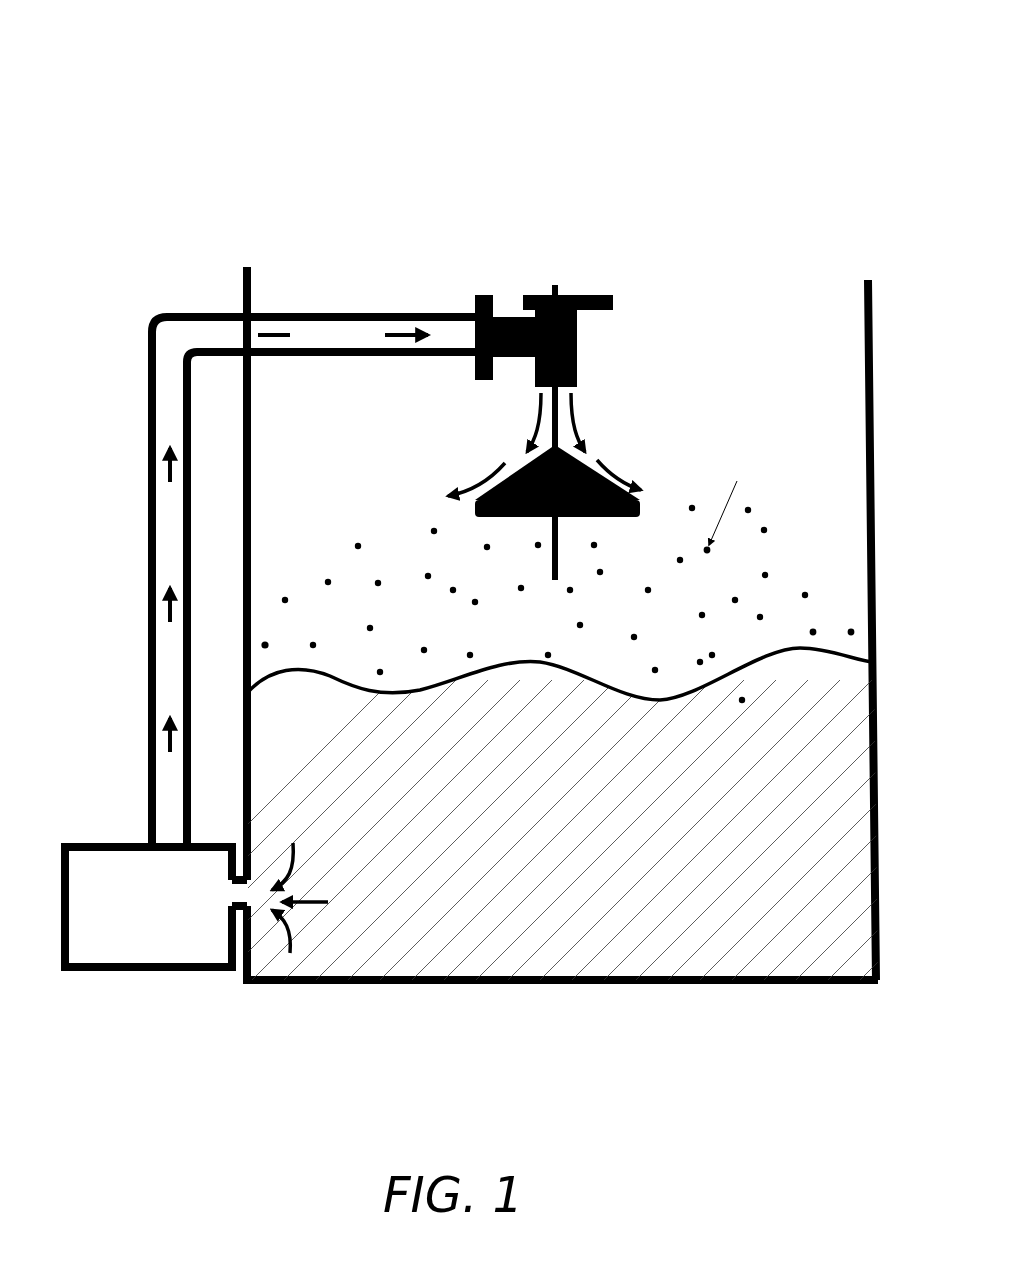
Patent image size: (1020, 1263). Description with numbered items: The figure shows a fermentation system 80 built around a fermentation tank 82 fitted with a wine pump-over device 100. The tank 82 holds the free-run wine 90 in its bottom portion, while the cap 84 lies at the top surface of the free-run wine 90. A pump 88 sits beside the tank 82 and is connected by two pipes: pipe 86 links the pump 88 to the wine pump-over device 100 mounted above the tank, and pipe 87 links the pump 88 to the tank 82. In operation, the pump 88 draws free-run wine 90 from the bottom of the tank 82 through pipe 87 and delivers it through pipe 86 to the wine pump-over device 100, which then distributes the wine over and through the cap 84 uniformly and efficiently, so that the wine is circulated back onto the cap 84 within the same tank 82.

The fermentation system 80 is at (212, 52).
The fermentation tank 82 is at (670, 350).
The cap 84 is at (812, 600).
The pipe 86 is at (162, 350).
The pipe 87 is at (242, 902).
The pump 88 is at (145, 930).
The free-run wine 90 is at (695, 890).
The wine pump-over device 100 is at (543, 292).